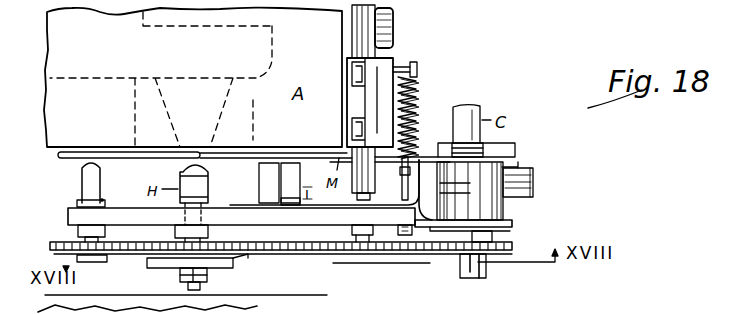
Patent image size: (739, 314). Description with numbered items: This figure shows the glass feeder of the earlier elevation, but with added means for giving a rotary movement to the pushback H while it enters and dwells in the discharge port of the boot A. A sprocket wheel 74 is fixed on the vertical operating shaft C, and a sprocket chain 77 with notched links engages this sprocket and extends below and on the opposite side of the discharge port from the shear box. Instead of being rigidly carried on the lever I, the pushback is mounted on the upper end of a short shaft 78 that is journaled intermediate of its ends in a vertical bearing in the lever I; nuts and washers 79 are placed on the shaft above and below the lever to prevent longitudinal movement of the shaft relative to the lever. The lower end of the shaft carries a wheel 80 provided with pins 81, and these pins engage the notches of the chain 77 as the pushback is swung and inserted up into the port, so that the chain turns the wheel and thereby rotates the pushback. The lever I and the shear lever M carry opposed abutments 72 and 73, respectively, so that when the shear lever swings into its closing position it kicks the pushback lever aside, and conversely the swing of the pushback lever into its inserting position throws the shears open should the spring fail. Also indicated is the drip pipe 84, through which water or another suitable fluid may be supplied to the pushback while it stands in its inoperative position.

The abutment 72 is at (281, 206).
The abutment 73 is at (257, 177).
The sprocket wheel 74 is at (512, 250).
The sprocket chain 77 is at (362, 251).
The short shaft 78 is at (201, 287).
The nuts and washers 79 is at (231, 185).
The wheel 80 is at (188, 275).
The pins 81 is at (233, 258).
The drip pipe 84 is at (70, 162).